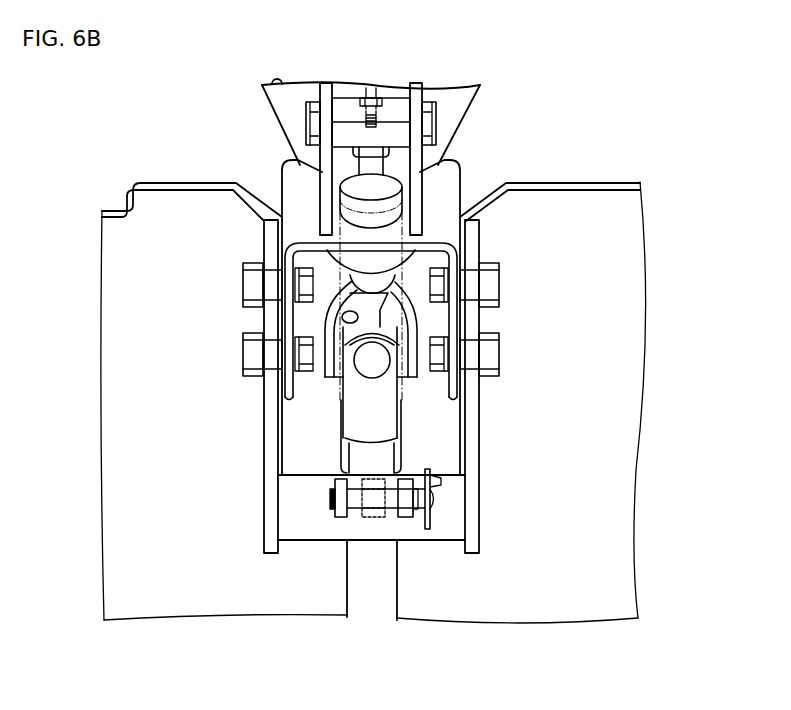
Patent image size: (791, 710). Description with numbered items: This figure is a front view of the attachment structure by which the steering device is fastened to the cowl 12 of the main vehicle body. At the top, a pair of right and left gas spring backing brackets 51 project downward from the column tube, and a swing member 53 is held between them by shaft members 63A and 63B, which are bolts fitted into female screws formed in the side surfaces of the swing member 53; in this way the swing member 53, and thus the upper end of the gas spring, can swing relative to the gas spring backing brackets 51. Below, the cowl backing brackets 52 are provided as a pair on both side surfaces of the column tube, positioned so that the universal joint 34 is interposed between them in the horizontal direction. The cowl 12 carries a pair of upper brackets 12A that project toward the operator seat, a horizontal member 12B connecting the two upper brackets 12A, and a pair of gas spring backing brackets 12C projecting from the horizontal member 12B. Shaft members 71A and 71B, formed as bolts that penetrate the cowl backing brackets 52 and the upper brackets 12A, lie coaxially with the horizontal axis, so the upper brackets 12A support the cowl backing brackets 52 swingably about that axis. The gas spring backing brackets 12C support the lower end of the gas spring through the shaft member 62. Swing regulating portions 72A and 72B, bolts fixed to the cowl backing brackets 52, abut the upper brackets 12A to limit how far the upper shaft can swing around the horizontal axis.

The cowl 12 is at (182, 207).
The upper bracket 12A is at (271, 545).
The horizontal member 12B is at (318, 528).
The gas spring backing bracket 12C is at (348, 517).
The universal joint 34 is at (330, 379).
The gas spring backing bracket 51 is at (330, 86).
The cowl backing bracket 52 is at (290, 399).
The swing member 53 is at (382, 93).
The shaft member 62 is at (330, 496).
The shaft member 63A is at (306, 125).
The shaft member 63B is at (436, 125).
The shaft member 71A is at (243, 355).
The shaft member 71B is at (499, 355).
The swing regulating portion 72A is at (243, 287).
The swing regulating portion 72B is at (499, 287).